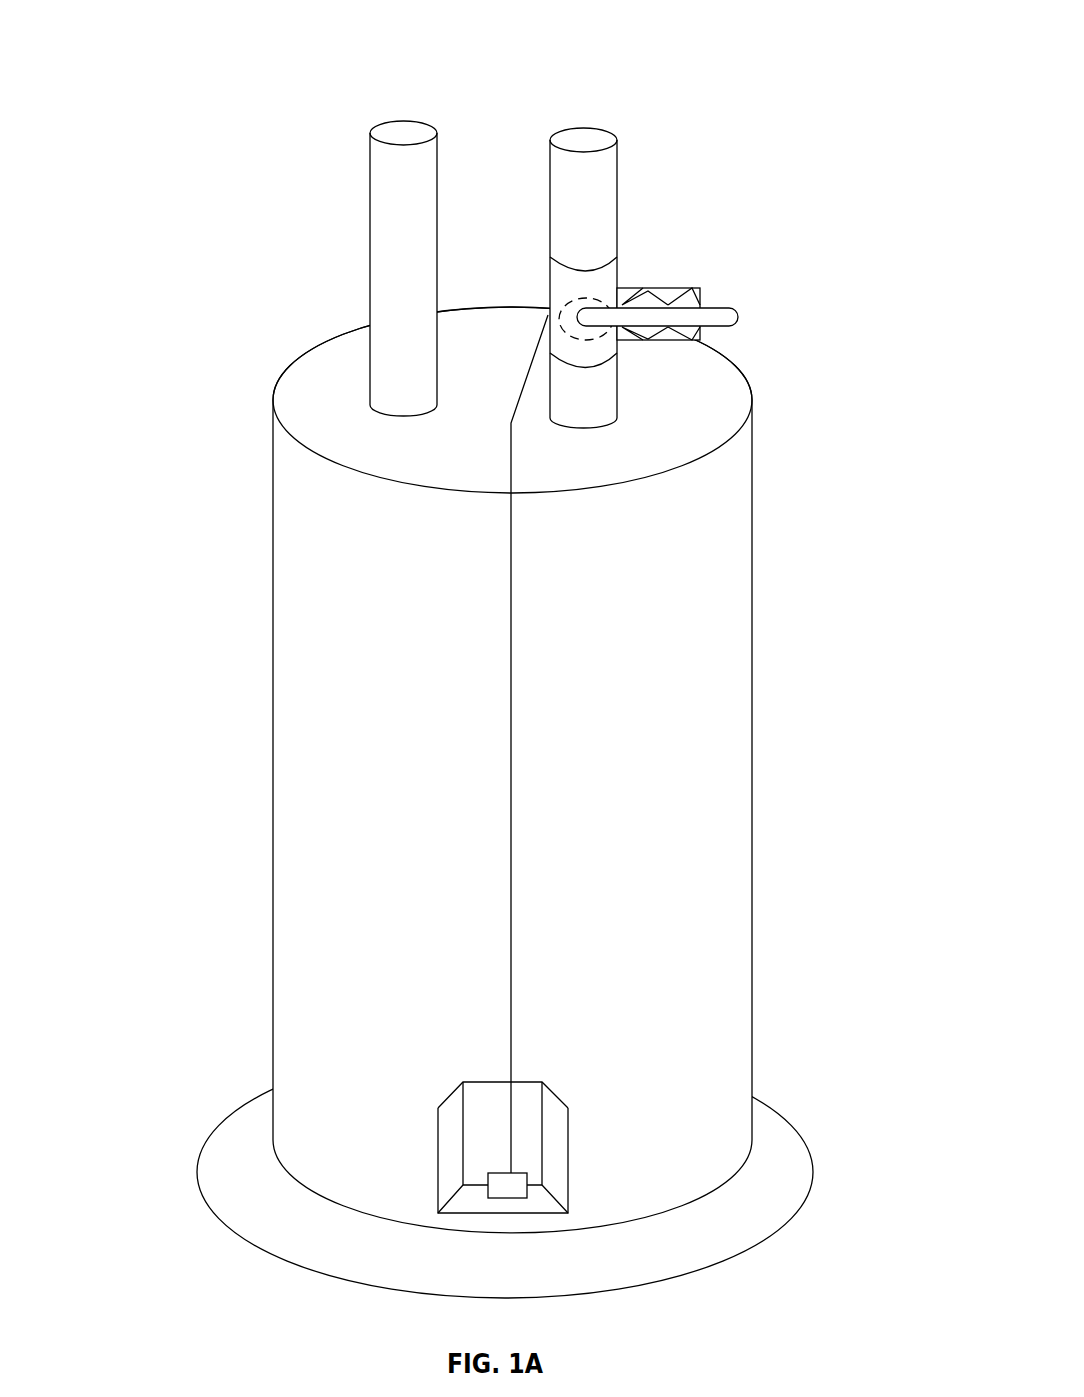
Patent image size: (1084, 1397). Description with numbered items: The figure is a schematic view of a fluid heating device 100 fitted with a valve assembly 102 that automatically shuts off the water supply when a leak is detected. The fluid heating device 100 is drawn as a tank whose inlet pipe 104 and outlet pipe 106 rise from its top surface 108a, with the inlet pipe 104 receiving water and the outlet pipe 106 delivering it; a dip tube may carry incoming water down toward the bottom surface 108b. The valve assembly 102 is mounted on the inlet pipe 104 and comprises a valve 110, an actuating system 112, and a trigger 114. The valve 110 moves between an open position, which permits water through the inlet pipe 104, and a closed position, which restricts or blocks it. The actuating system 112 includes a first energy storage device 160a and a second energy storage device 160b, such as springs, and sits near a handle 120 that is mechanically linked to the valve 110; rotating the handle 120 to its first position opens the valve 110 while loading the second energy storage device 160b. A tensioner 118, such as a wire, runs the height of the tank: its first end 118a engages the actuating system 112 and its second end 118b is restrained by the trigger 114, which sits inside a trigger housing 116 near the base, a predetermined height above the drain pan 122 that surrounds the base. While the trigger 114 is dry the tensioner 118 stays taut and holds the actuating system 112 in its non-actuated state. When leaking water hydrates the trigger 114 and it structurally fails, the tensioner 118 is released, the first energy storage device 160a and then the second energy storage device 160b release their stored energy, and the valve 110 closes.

The fluid heating device 100 is at (175, 97).
The valve assembly 102 is at (653, 157).
The inlet pipe 104 is at (573, 127).
The outlet pipe 106 is at (397, 123).
The top surface 108a is at (308, 408).
The bottom surface 108b is at (313, 1143).
The valve 110 is at (617, 342).
The actuating system 112 is at (713, 298).
The trigger 114 is at (527, 1187).
The trigger housing 116 is at (568, 1107).
The tensioner 118 is at (512, 817).
The first end 118a is at (553, 314).
The second end 118b is at (513, 1170).
The handle 120 is at (738, 318).
The drain pan 122 is at (242, 1098).
The first energy storage device 160a is at (642, 290).
The second energy storage device 160b is at (687, 290).